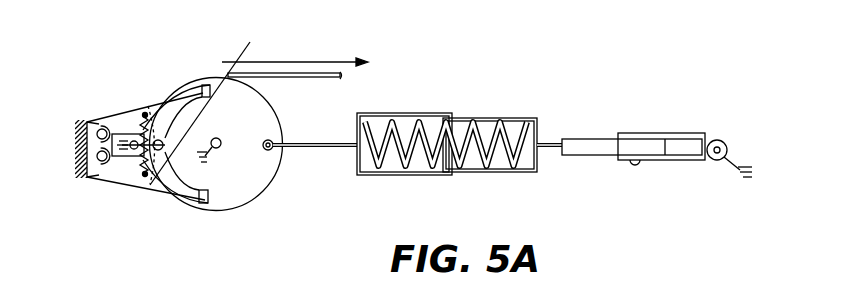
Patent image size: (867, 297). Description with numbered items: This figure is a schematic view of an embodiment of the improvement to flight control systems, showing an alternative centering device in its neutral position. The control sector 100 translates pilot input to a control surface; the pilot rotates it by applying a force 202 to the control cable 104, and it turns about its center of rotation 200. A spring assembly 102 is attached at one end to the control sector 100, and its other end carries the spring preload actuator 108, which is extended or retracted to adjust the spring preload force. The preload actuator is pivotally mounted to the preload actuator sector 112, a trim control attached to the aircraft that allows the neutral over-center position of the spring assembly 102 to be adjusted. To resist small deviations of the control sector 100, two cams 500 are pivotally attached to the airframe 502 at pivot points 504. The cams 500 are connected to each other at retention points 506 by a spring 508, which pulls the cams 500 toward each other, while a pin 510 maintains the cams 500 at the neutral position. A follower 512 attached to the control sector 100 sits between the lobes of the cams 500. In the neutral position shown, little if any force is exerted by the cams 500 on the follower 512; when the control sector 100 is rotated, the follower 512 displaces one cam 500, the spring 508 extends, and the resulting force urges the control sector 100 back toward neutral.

The control sector 100 is at (197, 79).
The spring assembly 102 is at (413, 108).
The control cable 104 is at (284, 78).
The spring preload actuator 108 is at (573, 156).
The preload actuator sector 112 is at (726, 141).
The center of rotation 200 is at (218, 139).
The force applied by the pilot 202 is at (278, 62).
The cams 500 is at (110, 111).
The airframe 502 is at (83, 178).
The pivot points 504 is at (80, 130).
The retention points 506 is at (147, 113).
The spring 508 is at (163, 106).
The pin 510 is at (128, 155).
The follower 512 is at (208, 102).